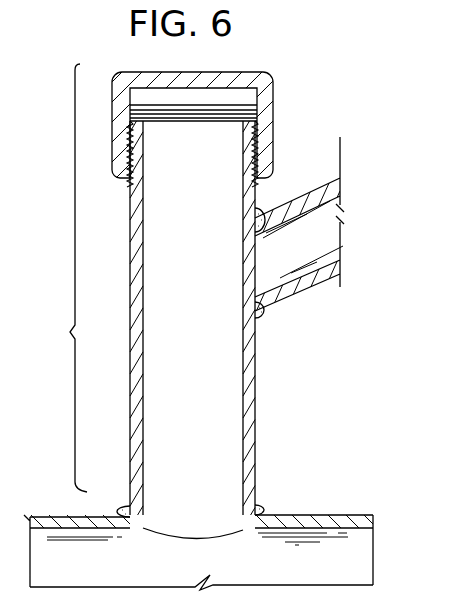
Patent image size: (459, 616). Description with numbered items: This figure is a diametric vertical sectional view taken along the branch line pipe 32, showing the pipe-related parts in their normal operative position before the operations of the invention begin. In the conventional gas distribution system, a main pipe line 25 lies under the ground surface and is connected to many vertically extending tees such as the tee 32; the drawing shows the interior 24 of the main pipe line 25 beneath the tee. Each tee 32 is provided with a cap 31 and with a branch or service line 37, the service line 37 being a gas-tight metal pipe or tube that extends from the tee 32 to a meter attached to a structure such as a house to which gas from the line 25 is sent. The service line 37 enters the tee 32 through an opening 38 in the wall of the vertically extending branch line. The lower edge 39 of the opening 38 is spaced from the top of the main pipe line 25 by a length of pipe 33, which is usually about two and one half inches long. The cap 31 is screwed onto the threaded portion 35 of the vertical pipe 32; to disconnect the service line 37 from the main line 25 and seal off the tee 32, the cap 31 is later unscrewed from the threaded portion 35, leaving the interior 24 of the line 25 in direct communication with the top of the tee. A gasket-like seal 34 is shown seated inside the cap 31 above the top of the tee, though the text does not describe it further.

The interior of the main pipe line 24 is at (90, 569).
The main pipe line 25 is at (82, 515).
The cap 31 is at (273, 113).
The branch line pipe / tee 32 is at (62, 278).
The length of pipe 33 is at (253, 392).
The gasket / seal 34 is at (247, 137).
The threaded portion 35 is at (130, 183).
The branch or service line 37 is at (310, 277).
The opening 38 is at (272, 245).
The lower edge of the opening 39 is at (245, 312).